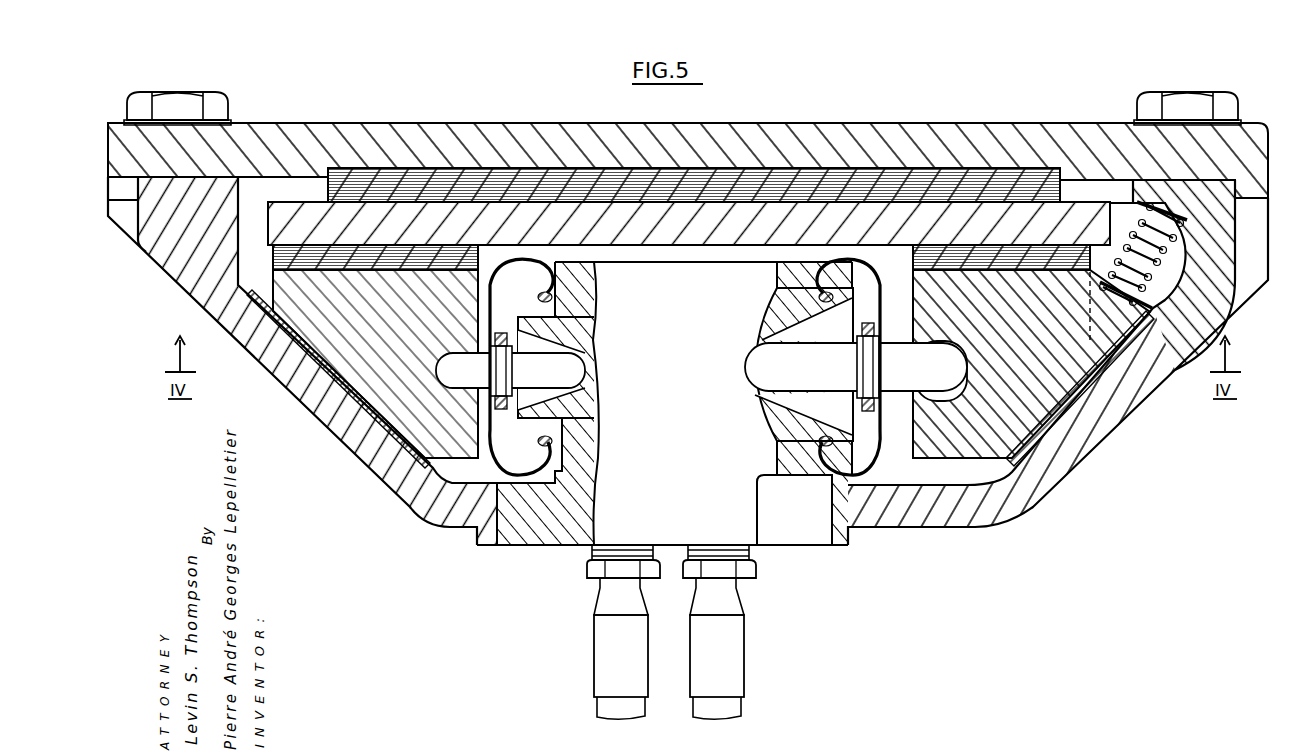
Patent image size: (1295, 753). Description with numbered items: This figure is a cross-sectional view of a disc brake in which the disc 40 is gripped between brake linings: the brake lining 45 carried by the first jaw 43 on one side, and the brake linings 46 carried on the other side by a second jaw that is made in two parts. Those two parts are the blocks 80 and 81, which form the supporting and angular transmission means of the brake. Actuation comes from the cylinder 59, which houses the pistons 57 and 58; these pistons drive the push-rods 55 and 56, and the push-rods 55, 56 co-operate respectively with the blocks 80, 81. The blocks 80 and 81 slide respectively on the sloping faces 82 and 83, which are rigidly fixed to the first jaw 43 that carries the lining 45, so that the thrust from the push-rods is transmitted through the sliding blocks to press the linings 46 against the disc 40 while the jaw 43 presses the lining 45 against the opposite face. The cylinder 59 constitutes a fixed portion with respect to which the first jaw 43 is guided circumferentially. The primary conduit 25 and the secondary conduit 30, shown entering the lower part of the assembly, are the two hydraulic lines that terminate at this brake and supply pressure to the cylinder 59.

The primary conduit 25 is at (594, 664).
The secondary conduit 30 is at (746, 664).
The disc 40 is at (281, 226).
The first jaw 43 is at (448, 136).
The brake lining 45 is at (955, 180).
The brake linings 46 is at (389, 259).
The push-rod 55 is at (578, 370).
The push-rod 56 is at (768, 367).
The piston 57 is at (585, 405).
The piston 58 is at (778, 406).
The cylinder 59 is at (582, 542).
The block 80 is at (315, 337).
The block 81 is at (1108, 372).
The sloping face 82 is at (372, 406).
The sloping face 83 is at (1060, 406).